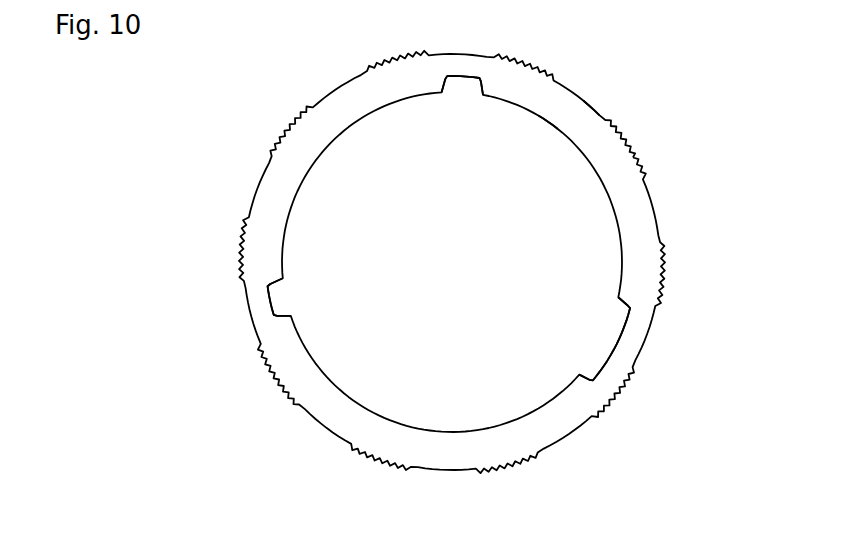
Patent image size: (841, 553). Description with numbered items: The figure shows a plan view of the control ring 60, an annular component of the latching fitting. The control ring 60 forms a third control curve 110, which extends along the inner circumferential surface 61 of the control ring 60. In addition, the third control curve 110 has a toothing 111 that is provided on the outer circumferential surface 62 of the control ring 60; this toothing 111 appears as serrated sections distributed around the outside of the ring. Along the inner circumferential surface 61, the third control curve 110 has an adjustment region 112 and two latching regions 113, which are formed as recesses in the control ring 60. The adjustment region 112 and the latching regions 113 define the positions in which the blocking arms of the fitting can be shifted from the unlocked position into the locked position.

The control ring 60 is at (370, 262).
The inner circumferential surface 61 is at (548, 127).
The outer circumferential surface 62 is at (593, 108).
The third control curve 110 is at (330, 174).
The toothing 111 is at (265, 128).
The adjustment region 112 is at (617, 348).
The latching region 113 is at (462, 80).